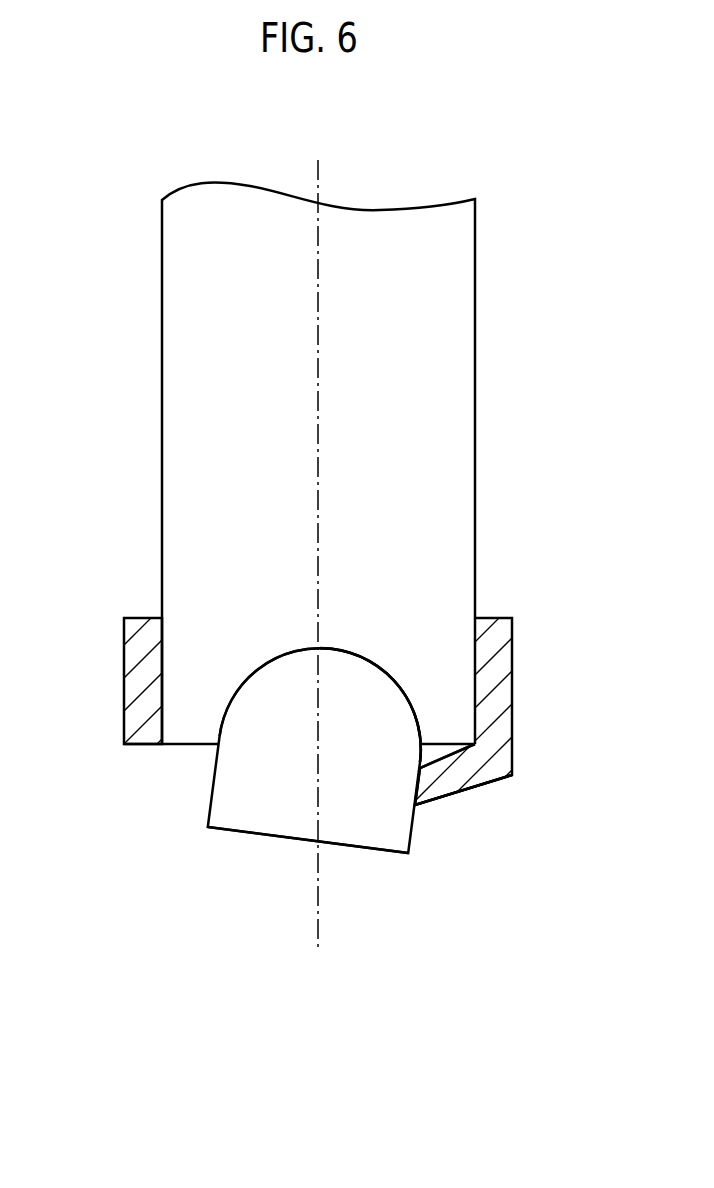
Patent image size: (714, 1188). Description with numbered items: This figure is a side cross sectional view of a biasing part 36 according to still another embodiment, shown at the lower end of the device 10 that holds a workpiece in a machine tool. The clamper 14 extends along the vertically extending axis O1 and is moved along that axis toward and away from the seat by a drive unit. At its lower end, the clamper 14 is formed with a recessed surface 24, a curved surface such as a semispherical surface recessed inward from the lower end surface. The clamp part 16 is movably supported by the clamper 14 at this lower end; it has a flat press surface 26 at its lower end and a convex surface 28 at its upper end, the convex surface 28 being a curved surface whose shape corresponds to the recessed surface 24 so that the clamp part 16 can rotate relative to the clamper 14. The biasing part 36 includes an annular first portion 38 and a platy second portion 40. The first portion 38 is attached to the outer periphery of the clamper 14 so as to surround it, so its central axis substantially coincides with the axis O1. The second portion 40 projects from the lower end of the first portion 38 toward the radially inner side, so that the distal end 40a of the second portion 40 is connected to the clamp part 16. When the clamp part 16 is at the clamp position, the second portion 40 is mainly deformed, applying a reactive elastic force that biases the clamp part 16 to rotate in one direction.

The device 10 is at (542, 148).
The clamper 14 is at (452, 390).
The clamp part 16 is at (408, 854).
The recessed surface 24 is at (272, 658).
The press surface 26 is at (224, 830).
The convex surface 28 is at (370, 656).
The biasing part 36 is at (515, 654).
The first portion 38 is at (138, 650).
The second portion 40 is at (464, 777).
The distal end 40a is at (412, 788).
The axis O1 is at (318, 932).